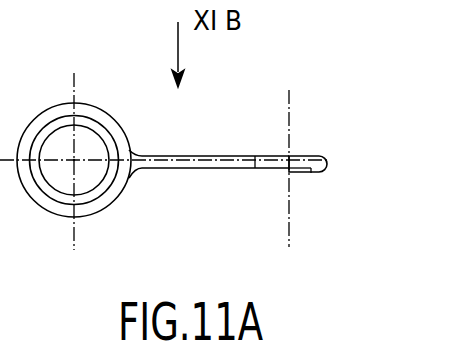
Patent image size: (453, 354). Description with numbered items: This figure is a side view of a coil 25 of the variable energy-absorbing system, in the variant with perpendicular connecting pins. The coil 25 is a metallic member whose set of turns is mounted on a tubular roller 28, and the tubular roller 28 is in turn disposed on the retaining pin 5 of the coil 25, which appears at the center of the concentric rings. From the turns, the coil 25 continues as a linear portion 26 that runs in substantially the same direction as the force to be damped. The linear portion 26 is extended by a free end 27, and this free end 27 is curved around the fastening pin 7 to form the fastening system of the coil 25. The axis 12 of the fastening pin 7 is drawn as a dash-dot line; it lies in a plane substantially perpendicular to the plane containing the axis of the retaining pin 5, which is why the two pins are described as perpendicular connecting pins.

The retaining pin 5 is at (73, 159).
The fastening pin 7 is at (296, 155).
The axis of the fastening pin 12 is at (287, 114).
The coil 25 is at (36, 197).
The linear portion 26 is at (196, 164).
The free end 27 is at (311, 173).
The tubular roller 28 is at (97, 195).